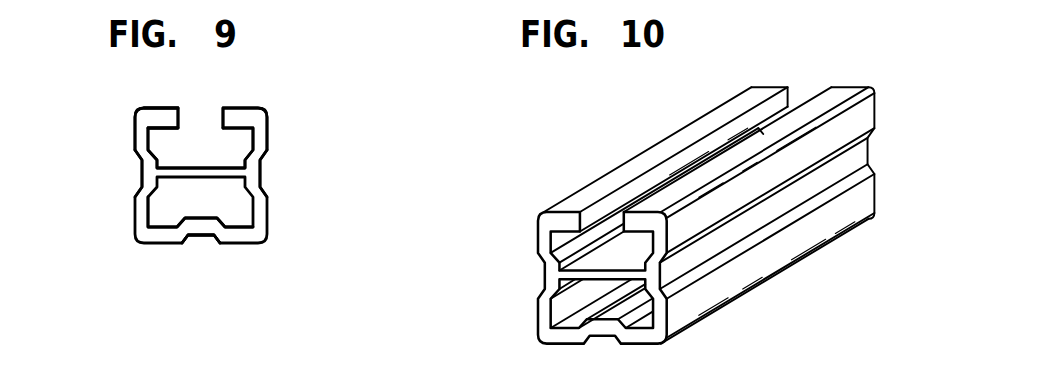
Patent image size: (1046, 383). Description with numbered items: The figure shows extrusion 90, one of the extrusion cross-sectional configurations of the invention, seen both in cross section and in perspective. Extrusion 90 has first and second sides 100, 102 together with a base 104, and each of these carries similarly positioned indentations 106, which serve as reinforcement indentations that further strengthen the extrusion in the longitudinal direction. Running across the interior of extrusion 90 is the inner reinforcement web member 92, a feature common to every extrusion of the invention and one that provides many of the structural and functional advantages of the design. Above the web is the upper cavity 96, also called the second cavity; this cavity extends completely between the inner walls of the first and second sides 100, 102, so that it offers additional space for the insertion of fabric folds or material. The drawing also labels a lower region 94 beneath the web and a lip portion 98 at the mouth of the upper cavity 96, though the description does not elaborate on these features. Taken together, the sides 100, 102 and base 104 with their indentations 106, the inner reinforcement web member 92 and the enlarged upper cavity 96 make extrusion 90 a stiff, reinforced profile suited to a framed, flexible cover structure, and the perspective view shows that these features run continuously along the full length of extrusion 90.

In FIG. 9, the extrusion 90 is at (127, 95).
In FIG. 10, the extrusion 90 is at (592, 148).
In FIG. 9, the inner reinforcement web member 92 is at (233, 178).
In FIG. 10, the inner reinforcement web member 92 is at (592, 280).
In FIG. 9, the bottom wall of lower channel 94 is at (162, 208).
In FIG. 9, the upper cavity 96 is at (197, 143).
In FIG. 9, the lip 98 is at (180, 120).
In FIG. 9, the first side 100 is at (260, 131).
In FIG. 9, the second side 102 is at (137, 134).
In FIG. 9, the base 104 is at (168, 233).
In FIG. 9, the indentations 106 is at (140, 170).